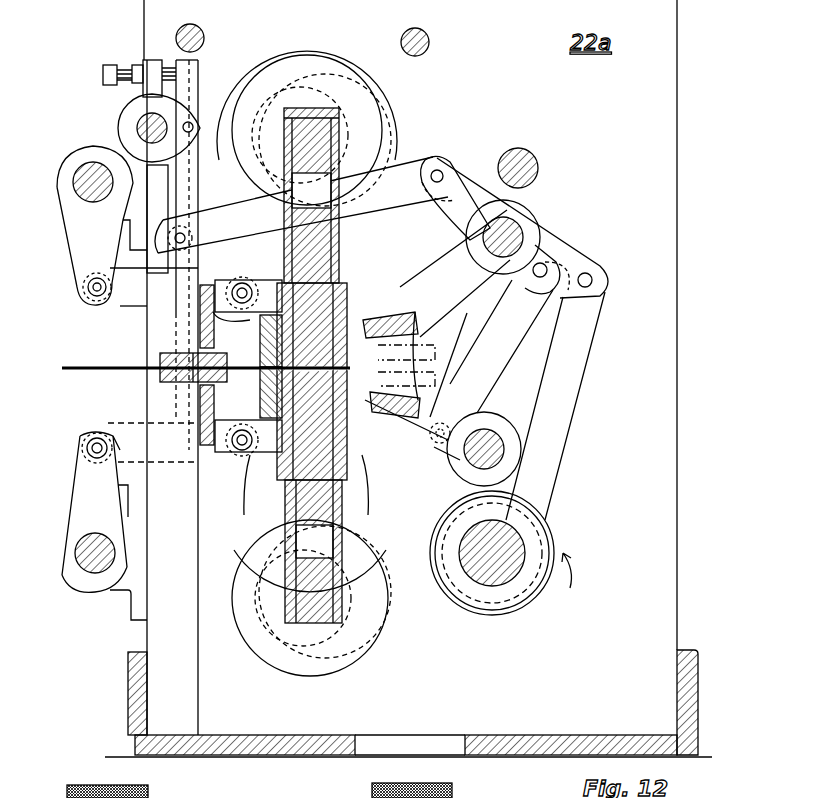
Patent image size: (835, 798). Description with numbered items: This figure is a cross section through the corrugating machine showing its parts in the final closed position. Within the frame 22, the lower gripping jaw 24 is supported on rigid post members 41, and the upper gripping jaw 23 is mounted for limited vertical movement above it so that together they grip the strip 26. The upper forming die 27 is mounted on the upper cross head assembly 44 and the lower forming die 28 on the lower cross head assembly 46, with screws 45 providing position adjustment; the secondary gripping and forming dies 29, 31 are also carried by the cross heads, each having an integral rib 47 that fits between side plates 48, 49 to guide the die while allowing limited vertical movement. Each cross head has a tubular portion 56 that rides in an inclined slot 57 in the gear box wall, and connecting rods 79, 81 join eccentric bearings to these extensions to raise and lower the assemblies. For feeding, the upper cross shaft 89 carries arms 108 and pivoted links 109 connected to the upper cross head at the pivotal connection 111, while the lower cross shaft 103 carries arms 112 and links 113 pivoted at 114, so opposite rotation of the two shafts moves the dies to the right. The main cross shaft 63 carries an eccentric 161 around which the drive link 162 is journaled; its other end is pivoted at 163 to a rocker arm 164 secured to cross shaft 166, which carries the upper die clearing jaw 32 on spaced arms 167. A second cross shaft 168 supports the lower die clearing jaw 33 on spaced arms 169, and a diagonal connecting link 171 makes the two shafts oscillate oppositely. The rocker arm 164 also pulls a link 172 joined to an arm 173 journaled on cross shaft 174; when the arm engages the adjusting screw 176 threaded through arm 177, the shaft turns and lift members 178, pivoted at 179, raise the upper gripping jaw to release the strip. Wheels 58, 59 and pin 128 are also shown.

The frame 22 is at (687, 492).
The upper gripping jaw 23 is at (162, 355).
The lower gripping jaw 24 is at (165, 380).
The strip 26 is at (64, 370).
The upper forming die 27 is at (258, 350).
The lower forming die 28 is at (262, 380).
The secondary gripping and forming die 29 is at (335, 352).
The secondary gripping and forming die 31 is at (336, 380).
The upper die clearing jaw 32 is at (425, 340).
The lower die clearing jaw 33 is at (420, 383).
The rigid post member 41 is at (190, 655).
The upper cross head assembly 44 is at (353, 230).
The screw 45 is at (67, 790).
The lower cross head assembly 46 is at (353, 533).
The integral rib 47 is at (307, 381).
The side plate 48 is at (262, 325).
The side plate 49 is at (380, 317).
The tubular portion 56 is at (313, 436).
The inclined slot 57 is at (320, 96).
The upper wheel 58 is at (290, 94).
The lower wheel 59 is at (301, 638).
The main cross shaft 63 is at (525, 545).
The connecting rod 79 is at (448, 250).
The connecting rod 81 is at (372, 505).
The upper cross shaft 89 is at (78, 172).
The lower cross shaft 103 is at (82, 568).
The arm 108 is at (72, 237).
The link 109 is at (112, 302).
The pivotal connection 111 is at (242, 285).
The arm 112 is at (72, 492).
The link 113 is at (122, 432).
The pivot 114 is at (240, 450).
The pivot pin 128 is at (530, 168).
The eccentric 161 is at (508, 615).
The drive link 162 is at (572, 402).
The pivot 163 is at (597, 280).
The rocker arm 164 is at (565, 245).
The cross shaft 166 is at (512, 230).
The spaced arm 167 is at (484, 246).
The second cross shaft 168 is at (500, 455).
The spaced arm 169 is at (440, 440).
The diagonal connecting link 171 is at (527, 320).
The link 172 is at (405, 168).
The arm 173 is at (172, 200).
The cross shaft 174 is at (137, 122).
The adjusting screw 176 is at (120, 70).
The arm 177 is at (146, 62).
The lift member 178 is at (176, 300).
The pivot 179 is at (193, 125).